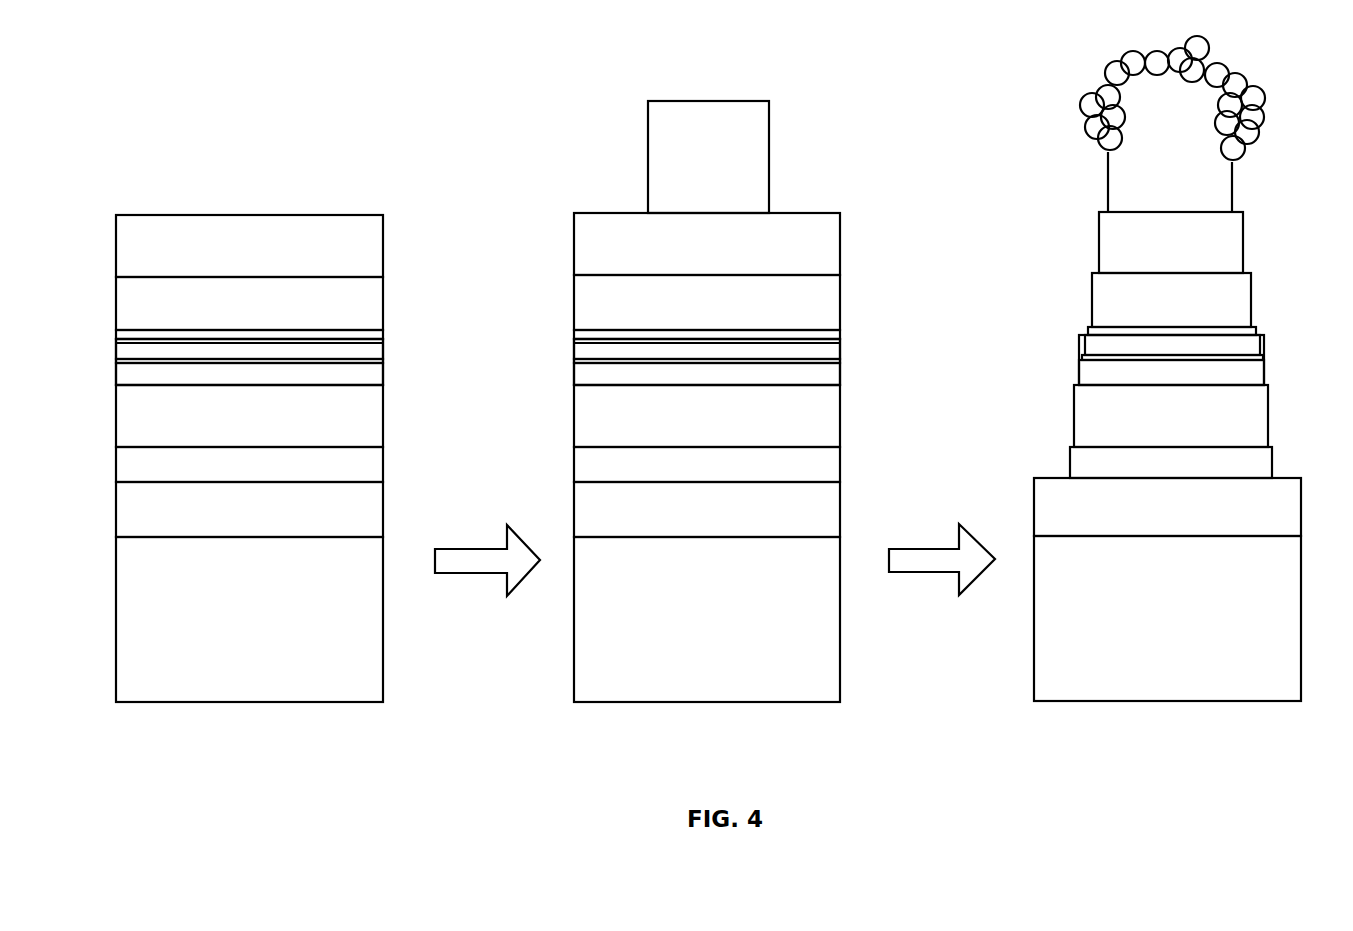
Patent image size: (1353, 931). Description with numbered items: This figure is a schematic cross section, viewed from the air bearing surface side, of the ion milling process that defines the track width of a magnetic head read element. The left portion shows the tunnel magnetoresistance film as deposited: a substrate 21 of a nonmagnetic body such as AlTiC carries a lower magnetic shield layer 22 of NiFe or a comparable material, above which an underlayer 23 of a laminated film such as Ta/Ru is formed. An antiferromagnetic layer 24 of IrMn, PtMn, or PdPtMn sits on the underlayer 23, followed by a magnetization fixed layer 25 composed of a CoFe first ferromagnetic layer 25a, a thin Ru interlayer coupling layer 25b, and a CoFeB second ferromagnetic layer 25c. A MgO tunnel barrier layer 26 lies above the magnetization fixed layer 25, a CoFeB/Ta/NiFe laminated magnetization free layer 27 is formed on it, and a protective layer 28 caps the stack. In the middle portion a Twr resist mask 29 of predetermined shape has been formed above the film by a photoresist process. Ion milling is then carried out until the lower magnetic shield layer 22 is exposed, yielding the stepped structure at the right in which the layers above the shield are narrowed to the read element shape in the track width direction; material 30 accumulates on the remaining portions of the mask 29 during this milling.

The substrate 21 is at (385, 625).
The lower magnetic shield layer 22 is at (385, 502).
The underlayer 23 is at (385, 457).
The antiferromagnetic layer 24 is at (385, 425).
The magnetization fixed layer 25 is at (113, 347).
The first ferromagnetic layer 25a is at (385, 381).
The interlayer coupling layer 25b is at (385, 363).
The second ferromagnetic layer 25c is at (385, 350).
The tunnel barrier layer 26 is at (385, 337).
The magnetization free layer 27 is at (385, 285).
The protective layer 28 is at (385, 240).
The Twr resist mask 29 is at (770, 125).
The redeposited material 30 is at (1263, 85).